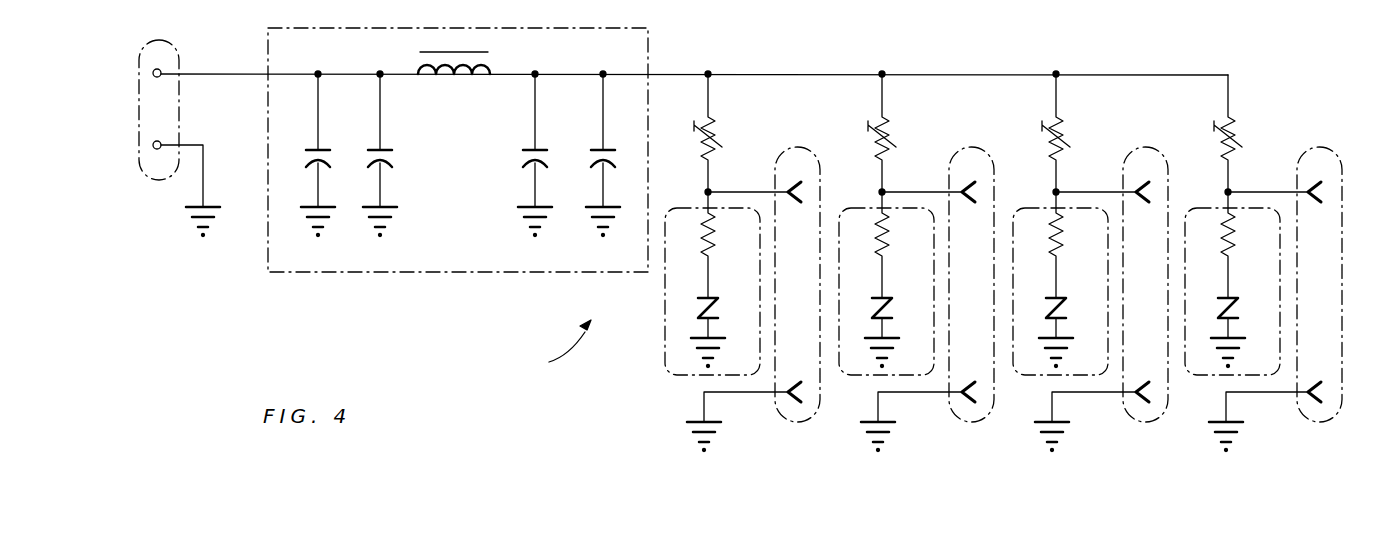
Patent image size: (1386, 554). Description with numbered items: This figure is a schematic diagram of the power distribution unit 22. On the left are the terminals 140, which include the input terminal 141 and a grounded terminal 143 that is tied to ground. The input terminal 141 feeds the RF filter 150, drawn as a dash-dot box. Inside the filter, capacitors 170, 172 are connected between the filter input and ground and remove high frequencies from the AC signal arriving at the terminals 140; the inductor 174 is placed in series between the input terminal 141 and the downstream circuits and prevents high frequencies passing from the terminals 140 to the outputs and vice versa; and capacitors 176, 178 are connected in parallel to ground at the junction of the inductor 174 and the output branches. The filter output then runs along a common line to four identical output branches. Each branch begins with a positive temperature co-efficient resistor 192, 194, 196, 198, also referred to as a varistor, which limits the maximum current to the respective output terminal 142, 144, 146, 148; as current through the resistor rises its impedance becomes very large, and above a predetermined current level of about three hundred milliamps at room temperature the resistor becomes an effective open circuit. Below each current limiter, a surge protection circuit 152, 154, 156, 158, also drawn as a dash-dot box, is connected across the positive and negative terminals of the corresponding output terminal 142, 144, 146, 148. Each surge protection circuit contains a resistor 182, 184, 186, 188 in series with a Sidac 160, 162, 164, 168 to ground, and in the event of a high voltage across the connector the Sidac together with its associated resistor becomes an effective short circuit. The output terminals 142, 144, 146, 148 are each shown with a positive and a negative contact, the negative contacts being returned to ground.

The power distribution unit 22 is at (552, 350).
The terminals 140 is at (195, 34).
The input terminal 141 is at (152, 72).
The ground terminal 143 is at (152, 147).
The RF filter 150 is at (650, 58).
The capacitor 170 is at (320, 148).
The capacitor 172 is at (382, 148).
The inductor 174 is at (478, 78).
The capacitor 176 is at (537, 148).
The capacitor 178 is at (605, 148).
The positive temperature co-efficient resistor 192 is at (714, 125).
The positive temperature co-efficient resistor 194 is at (888, 125).
The positive temperature co-efficient resistor 196 is at (1062, 125).
The positive temperature co-efficient resistor 198 is at (1234, 125).
The resistor 182 is at (720, 232).
The resistor 184 is at (894, 232).
The resistor 186 is at (1068, 232).
The resistor 188 is at (1240, 232).
The Sidac 160 is at (712, 296).
The Sidac 162 is at (886, 296).
The Sidac 164 is at (1060, 296).
The Sidac 168 is at (1232, 296).
The surge protection circuit 152 is at (668, 376).
The surge protection circuit 154 is at (842, 376).
The surge protection circuit 156 is at (1016, 376).
The surge protection circuit 158 is at (1188, 376).
The output terminal 142 is at (796, 422).
The output terminal 144 is at (970, 422).
The output terminal 146 is at (1144, 422).
The output terminal 148 is at (1318, 422).